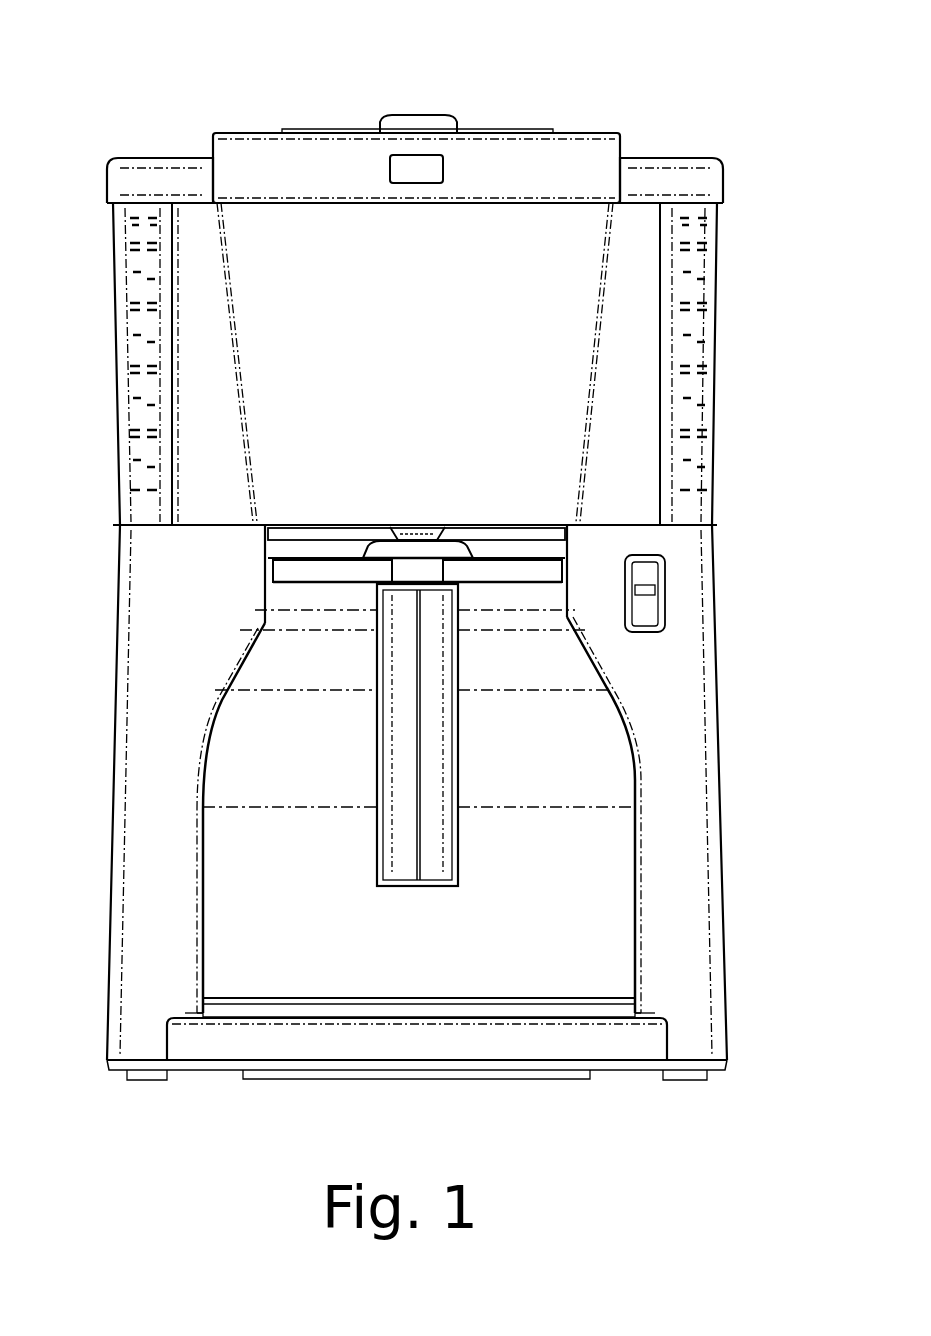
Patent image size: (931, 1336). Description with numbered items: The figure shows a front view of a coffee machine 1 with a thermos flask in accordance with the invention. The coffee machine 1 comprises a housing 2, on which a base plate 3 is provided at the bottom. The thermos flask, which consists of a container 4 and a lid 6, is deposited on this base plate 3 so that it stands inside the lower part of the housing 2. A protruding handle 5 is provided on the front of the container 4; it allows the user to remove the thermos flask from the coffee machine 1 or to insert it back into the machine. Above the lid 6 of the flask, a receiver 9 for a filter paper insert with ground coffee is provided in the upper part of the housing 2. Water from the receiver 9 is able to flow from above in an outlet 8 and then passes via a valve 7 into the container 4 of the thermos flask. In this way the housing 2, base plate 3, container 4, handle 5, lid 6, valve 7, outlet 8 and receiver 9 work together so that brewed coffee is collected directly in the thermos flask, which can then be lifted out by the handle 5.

The coffee machine 1 is at (697, 118).
The housing 2 is at (675, 778).
The base plate 3 is at (548, 1045).
The container 4 is at (547, 895).
The handle 5 is at (403, 825).
The lid 6 is at (322, 572).
The valve 7 is at (368, 547).
The outlet 8 is at (435, 523).
The receiver 9 is at (480, 318).